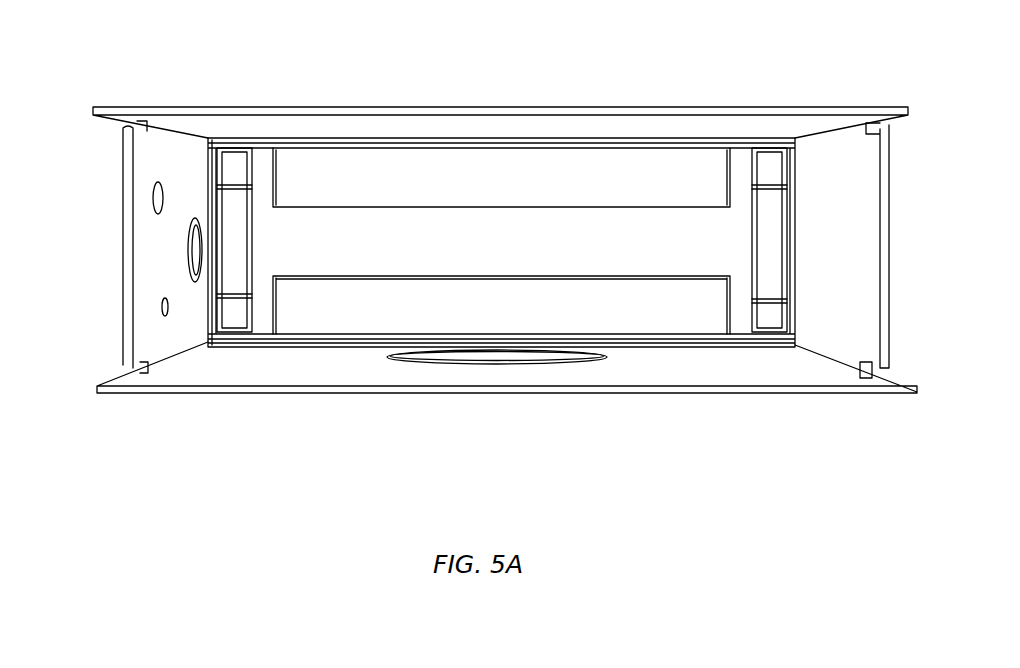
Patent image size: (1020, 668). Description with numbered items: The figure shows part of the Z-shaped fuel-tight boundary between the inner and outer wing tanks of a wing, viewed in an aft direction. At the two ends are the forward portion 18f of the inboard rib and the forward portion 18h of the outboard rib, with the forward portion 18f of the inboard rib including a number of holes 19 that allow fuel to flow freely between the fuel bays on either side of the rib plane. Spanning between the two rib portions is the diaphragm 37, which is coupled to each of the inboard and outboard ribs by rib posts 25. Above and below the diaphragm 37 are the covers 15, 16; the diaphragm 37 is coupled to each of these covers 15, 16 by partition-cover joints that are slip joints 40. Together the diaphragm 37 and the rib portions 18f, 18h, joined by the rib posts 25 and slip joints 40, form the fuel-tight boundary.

The cover 15 is at (620, 108).
The cover 16 is at (328, 388).
The forward portion of the inboard rib 18f is at (158, 157).
The forward portion of the outboard rib 18h is at (848, 165).
The holes 19 is at (152, 198).
The rib posts 25 is at (236, 167).
The diaphragm 37 is at (520, 243).
The slip joints 40 is at (370, 167).